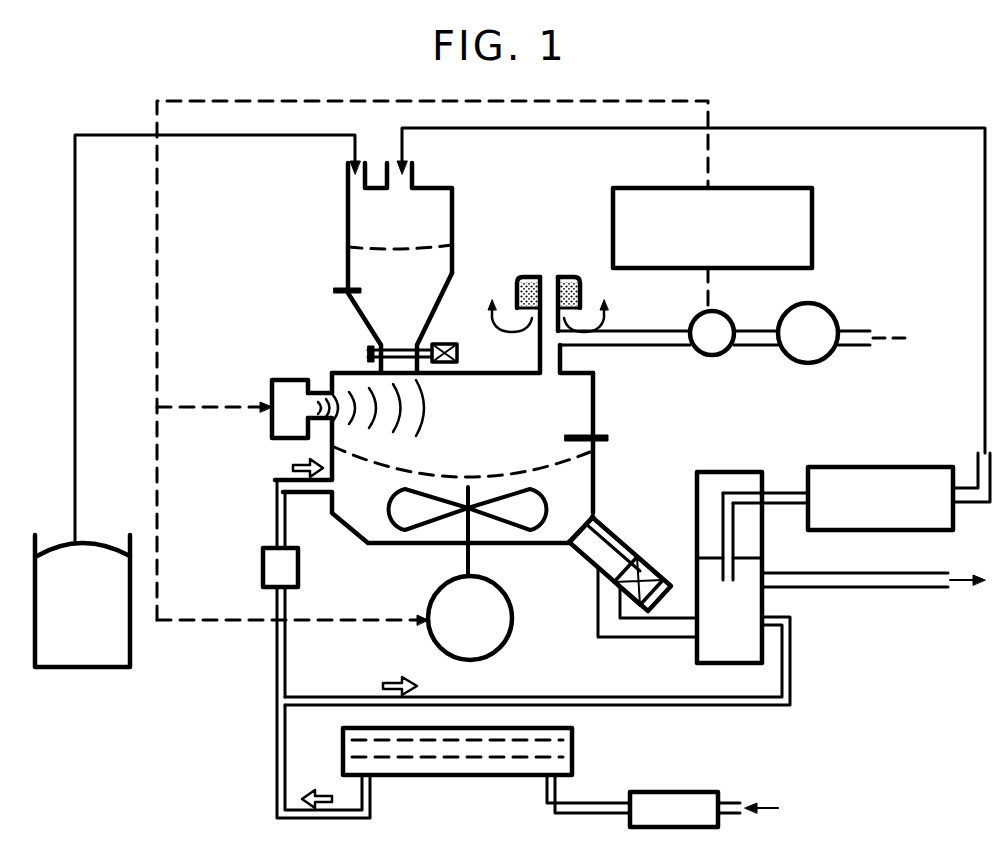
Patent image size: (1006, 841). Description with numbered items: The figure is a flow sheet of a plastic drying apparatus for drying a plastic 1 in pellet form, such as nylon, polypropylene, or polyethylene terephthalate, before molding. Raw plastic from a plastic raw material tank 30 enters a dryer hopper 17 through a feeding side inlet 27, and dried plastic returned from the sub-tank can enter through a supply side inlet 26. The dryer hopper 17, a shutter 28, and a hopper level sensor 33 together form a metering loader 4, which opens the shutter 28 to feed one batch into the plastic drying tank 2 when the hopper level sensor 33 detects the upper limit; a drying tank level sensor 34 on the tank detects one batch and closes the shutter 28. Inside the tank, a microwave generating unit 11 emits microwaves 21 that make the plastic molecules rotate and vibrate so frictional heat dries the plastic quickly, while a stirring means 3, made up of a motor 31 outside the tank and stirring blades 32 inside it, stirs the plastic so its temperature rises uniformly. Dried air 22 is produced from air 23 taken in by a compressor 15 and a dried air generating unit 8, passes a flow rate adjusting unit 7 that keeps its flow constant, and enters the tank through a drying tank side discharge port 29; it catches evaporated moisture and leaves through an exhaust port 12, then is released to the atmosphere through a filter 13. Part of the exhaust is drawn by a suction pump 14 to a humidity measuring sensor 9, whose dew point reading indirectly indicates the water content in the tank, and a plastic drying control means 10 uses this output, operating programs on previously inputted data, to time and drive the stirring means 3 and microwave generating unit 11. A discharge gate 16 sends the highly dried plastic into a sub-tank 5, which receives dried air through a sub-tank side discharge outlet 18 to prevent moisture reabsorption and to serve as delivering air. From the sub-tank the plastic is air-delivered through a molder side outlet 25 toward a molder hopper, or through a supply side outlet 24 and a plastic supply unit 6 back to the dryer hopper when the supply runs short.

The plastic 1 is at (433, 273).
The plastic drying tank 2 is at (596, 416).
The stirring means 3 is at (470, 565).
The metering loader 4 is at (368, 340).
The sub-tank 5 is at (750, 550).
The plastic supply unit 6 is at (912, 466).
The flow rate adjusting unit 7 is at (298, 570).
The dried air generating unit 8 is at (462, 775).
The humidity measuring sensor 9 is at (698, 314).
The plastic drying control means 10 is at (766, 188).
The microwave generating unit 11 is at (286, 422).
The exhaust port 12 is at (540, 355).
The filter 13 is at (533, 277).
The suction pump 14 is at (835, 315).
The compressor 15 is at (672, 792).
The discharge gate 16 is at (637, 557).
The dryer hopper 17 is at (347, 262).
The sub-tank side discharge outlet 18 is at (792, 677).
The microwaves 21 is at (318, 400).
The dried air 22 is at (293, 468).
The air 23 is at (773, 808).
The supply side outlet 24 is at (780, 492).
The molder side outlet 25 is at (888, 587).
The supply side inlet 26 is at (413, 172).
The feeding side inlet 27 is at (347, 172).
The shutter 28 is at (430, 347).
The drying tank side discharge port 29 is at (275, 525).
The plastic raw material tank 30 is at (130, 647).
The motor 31 is at (510, 641).
The stirring blades 32 is at (595, 514).
The hopper level sensor 33 is at (338, 287).
The drying tank level sensor 34 is at (610, 438).